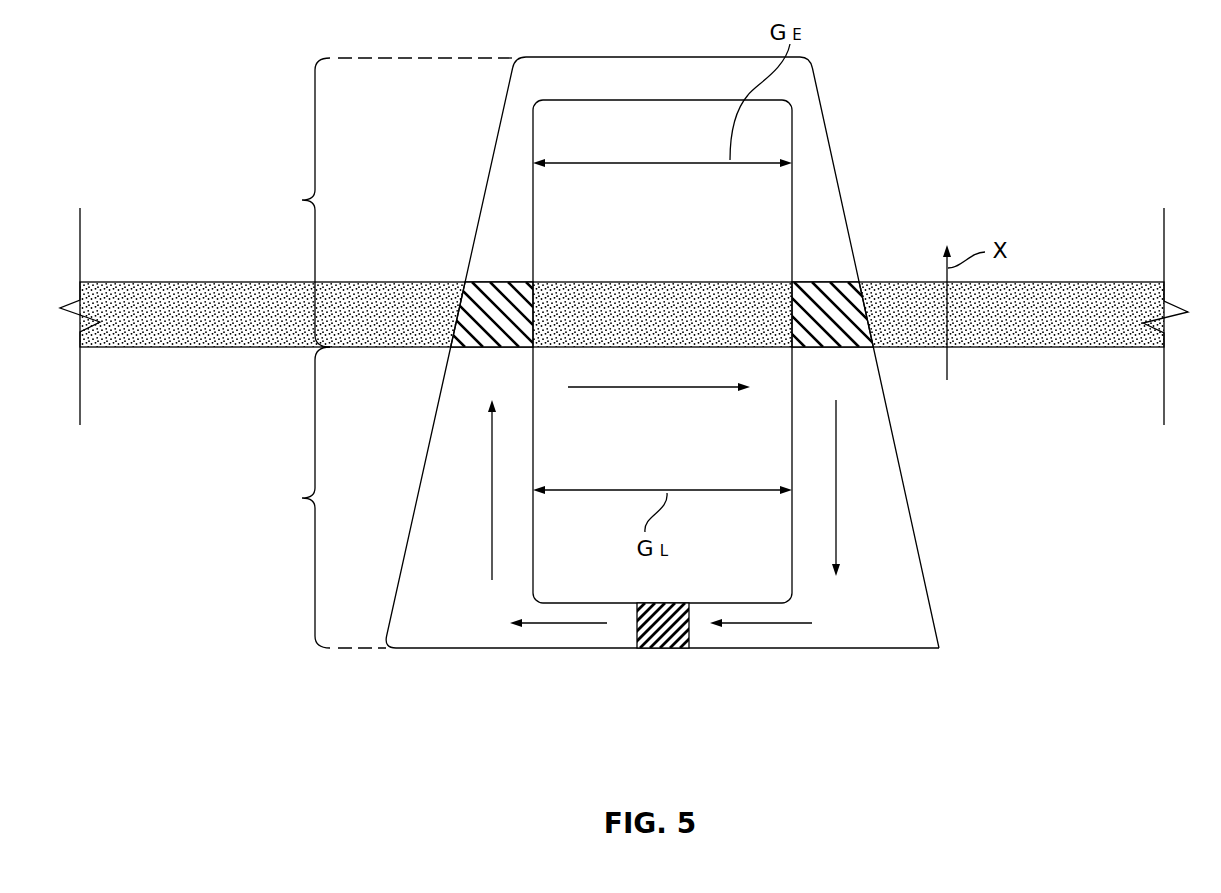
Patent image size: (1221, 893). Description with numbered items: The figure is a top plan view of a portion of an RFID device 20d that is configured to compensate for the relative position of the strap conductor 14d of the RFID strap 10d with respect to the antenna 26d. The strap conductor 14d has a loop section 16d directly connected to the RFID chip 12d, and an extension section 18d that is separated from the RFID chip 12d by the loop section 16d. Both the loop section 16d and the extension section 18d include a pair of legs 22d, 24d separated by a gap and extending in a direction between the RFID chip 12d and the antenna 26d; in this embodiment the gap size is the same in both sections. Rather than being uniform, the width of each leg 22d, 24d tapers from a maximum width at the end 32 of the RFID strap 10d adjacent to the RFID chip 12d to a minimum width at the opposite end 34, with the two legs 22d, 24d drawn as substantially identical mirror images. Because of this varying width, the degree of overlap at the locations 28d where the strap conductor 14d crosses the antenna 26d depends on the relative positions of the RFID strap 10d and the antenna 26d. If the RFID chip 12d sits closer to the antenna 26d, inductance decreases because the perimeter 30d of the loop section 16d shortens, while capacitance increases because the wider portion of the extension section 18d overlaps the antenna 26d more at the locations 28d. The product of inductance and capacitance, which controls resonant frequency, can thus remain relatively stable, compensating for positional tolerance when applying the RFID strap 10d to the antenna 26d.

The RFID strap 10d is at (805, 710).
The RFID chip 12d is at (662, 650).
The strap conductor 14d is at (686, 358).
The loop section 16d is at (302, 498).
The extension section 18d is at (302, 200).
The RFID device 20d is at (1016, 98).
The leg 22d is at (437, 576).
The leg 24d is at (486, 186).
The antenna 26d is at (1100, 348).
The locations 28d is at (482, 280).
The perimeter 30d is at (678, 389).
The end 32 is at (532, 650).
The opposite end 34 is at (678, 56).